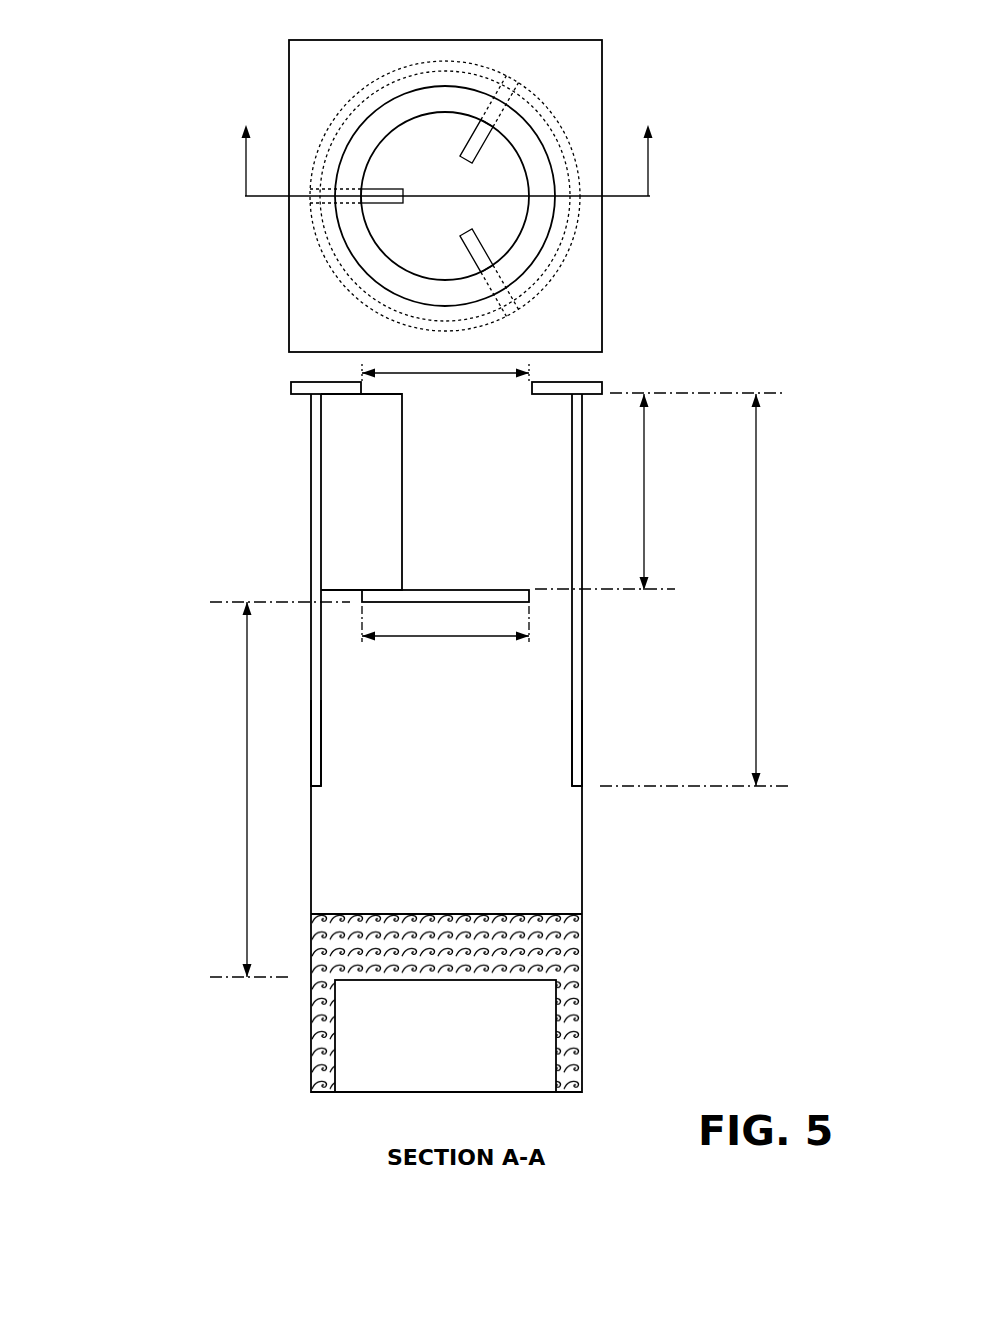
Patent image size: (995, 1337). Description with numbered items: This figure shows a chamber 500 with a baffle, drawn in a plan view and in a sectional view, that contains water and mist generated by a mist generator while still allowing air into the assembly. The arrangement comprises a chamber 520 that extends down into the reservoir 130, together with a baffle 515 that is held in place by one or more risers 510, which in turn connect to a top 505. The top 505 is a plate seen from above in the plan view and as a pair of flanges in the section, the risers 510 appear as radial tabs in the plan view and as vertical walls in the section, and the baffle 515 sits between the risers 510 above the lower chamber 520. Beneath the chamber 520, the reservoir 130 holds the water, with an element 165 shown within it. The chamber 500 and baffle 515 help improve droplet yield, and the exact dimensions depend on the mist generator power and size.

The chamber 500 is at (107, 31).
The top 505 is at (289, 318).
The riser 510 is at (383, 188).
The baffle 515 is at (498, 180).
The chamber 520 is at (498, 70).
The reservoir 130 is at (585, 870).
The inner structure 165 is at (505, 1030).